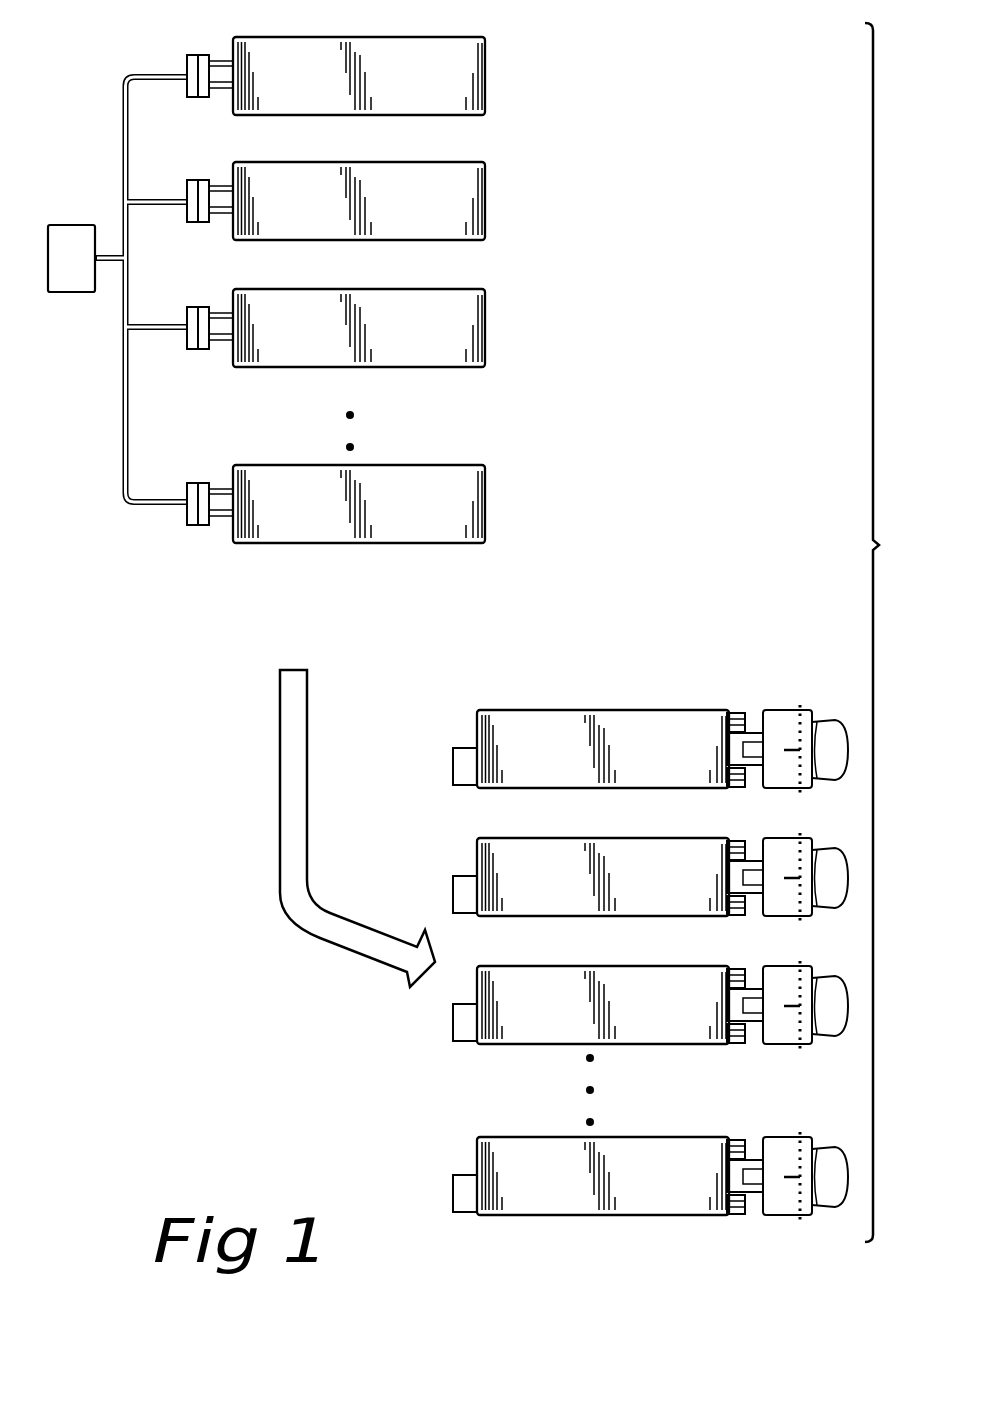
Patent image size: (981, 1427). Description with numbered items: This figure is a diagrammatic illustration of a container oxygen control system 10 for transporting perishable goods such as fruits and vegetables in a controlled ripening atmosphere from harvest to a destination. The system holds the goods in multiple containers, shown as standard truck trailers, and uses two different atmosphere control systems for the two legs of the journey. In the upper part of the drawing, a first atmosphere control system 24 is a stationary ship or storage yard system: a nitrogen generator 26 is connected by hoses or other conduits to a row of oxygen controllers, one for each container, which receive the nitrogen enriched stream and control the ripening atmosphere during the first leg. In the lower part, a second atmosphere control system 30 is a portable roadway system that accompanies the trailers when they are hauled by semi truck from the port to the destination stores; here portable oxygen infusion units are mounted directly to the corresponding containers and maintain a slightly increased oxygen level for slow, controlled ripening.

The atmosphere control system 10 is at (688, 99).
The first atmosphere control system 24 is at (97, 337).
The nitrogen generator 26 is at (80, 233).
The second atmosphere control system 30 is at (331, 1083).